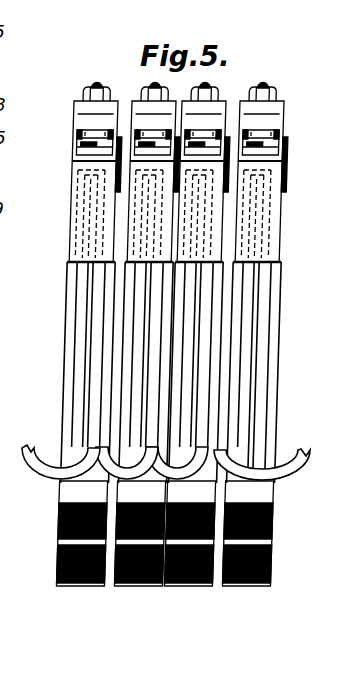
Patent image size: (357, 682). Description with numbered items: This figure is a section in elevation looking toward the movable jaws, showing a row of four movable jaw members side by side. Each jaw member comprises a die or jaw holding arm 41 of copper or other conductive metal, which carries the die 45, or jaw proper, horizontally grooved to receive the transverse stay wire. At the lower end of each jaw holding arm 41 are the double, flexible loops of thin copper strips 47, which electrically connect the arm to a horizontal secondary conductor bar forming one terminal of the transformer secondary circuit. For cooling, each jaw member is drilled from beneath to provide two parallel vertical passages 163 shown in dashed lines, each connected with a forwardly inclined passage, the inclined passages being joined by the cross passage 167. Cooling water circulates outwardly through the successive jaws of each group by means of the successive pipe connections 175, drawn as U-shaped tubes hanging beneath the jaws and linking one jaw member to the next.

The jaw holding arm 41 is at (71, 205).
The die 45 is at (73, 140).
The flexible loops of thin copper strips 47 is at (59, 524).
The vertical passages 163 is at (77, 245).
The cross passage 167 is at (72, 163).
The pipe connections 175 is at (86, 401).